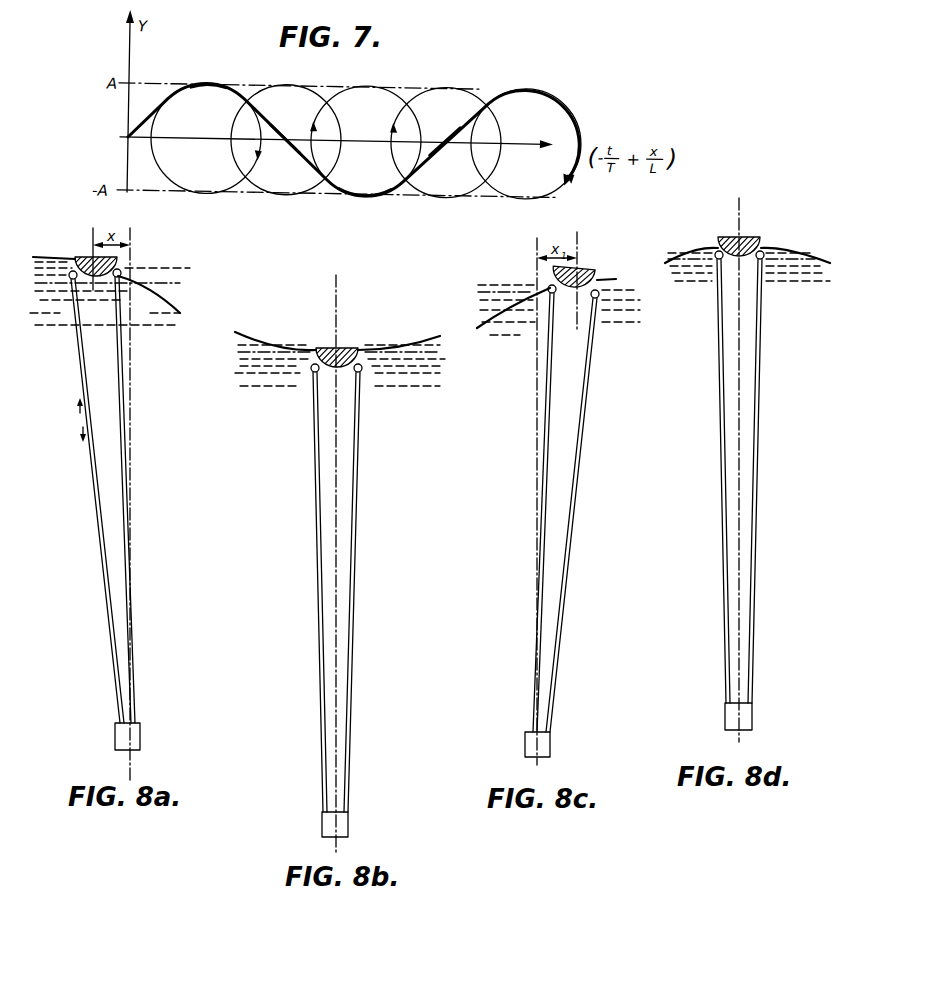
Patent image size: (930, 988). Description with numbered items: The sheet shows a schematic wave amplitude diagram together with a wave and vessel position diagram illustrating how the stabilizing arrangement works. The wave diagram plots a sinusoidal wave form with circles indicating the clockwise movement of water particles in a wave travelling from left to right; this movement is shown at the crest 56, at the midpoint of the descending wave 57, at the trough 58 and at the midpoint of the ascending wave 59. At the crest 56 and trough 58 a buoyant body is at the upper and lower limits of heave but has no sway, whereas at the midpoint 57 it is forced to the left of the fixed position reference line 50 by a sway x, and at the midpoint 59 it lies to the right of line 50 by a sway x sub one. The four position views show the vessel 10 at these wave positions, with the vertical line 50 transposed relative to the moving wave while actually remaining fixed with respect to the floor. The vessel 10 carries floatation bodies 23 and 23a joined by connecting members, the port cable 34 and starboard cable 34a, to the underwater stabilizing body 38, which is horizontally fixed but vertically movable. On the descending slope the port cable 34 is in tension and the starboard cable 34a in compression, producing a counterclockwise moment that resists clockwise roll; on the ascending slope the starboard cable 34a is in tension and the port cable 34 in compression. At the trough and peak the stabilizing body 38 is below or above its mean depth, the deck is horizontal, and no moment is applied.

In FIG. 8A, the vessel 10 is at (82, 256).
In FIG. 8B, the vessel 10 is at (328, 348).
In FIG. 8C, the vessel 10 is at (596, 269).
In FIG. 8D, the vessel 10 is at (761, 238).
In FIG. 8A, the floatation body 23 is at (70, 279).
In FIG. 8B, the floatation body 23 is at (313, 372).
In FIG. 8C, the floatation body 23 is at (548, 291).
In FIG. 8D, the floatation body 23 is at (716, 258).
In FIG. 8A, the floatation body 23a is at (121, 276).
In FIG. 8B, the floatation body 23a is at (361, 373).
In FIG. 8C, the floatation body 23a is at (598, 296).
In FIG. 8D, the floatation body 23a is at (763, 259).
In FIG. 8A, the port cable 34 is at (103, 563).
In FIG. 8B, the port cable 34 is at (320, 572).
In FIG. 8C, the port cable 34 is at (538, 560).
In FIG. 8D, the port cable 34 is at (725, 600).
In FIG. 8A, the starboard cable 34a is at (133, 568).
In FIG. 8B, the starboard cable 34a is at (352, 570).
In FIG. 8C, the starboard cable 34a is at (567, 563).
In FIG. 8D, the starboard cable 34a is at (752, 602).
In FIG. 8A, the underwater stabilizing body 38 is at (140, 738).
In FIG. 8B, the underwater stabilizing body 38 is at (348, 828).
In FIG. 8C, the underwater stabilizing body 38 is at (551, 747).
In FIG. 8D, the underwater stabilizing body 38 is at (753, 716).
In FIG. 8A, the fixed position reference line 50 is at (122, 275).
In FIG. 8B, the fixed position reference line 50 is at (337, 318).
In FIG. 8C, the fixed position reference line 50 is at (536, 281).
In FIG. 8D, the fixed position reference line 50 is at (741, 219).
In FIG. 7, the crest 56 is at (206, 83).
In FIG. 7, the midpoint of the descending wave 57 is at (284, 138).
In FIG. 7, the trough 58 is at (357, 192).
In FIG. 7, the midpoint of the ascending wave 59 is at (445, 140).